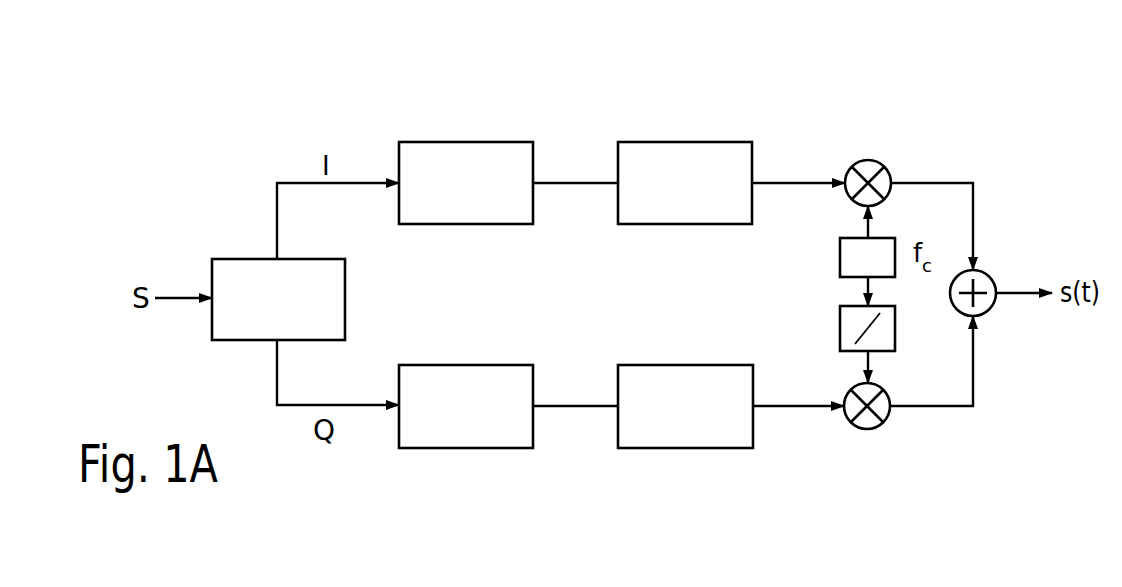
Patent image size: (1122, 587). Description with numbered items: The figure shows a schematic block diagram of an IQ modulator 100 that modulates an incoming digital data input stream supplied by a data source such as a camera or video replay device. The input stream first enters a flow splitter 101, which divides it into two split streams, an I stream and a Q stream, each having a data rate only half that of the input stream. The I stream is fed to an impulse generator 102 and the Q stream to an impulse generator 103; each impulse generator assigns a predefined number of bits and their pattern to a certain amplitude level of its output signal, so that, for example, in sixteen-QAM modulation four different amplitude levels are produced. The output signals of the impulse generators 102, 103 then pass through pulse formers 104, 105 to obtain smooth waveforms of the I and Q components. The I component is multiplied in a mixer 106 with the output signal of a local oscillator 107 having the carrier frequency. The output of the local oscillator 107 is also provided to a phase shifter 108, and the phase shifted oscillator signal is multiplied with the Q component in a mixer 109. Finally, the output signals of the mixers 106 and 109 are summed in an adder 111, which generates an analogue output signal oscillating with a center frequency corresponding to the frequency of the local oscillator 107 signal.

The IQ modulator 100 is at (218, 118).
The flow splitter 101 is at (300, 317).
The impulse generator 102 is at (488, 200).
The impulse generator 103 is at (488, 423).
The pulse former 104 is at (707, 200).
The pulse former 105 is at (707, 423).
The mixer 106 is at (882, 165).
The local oscillator 107 is at (889, 238).
The phase shifter 108 is at (840, 328).
The mixer 109 is at (884, 422).
The adder 111 is at (989, 276).